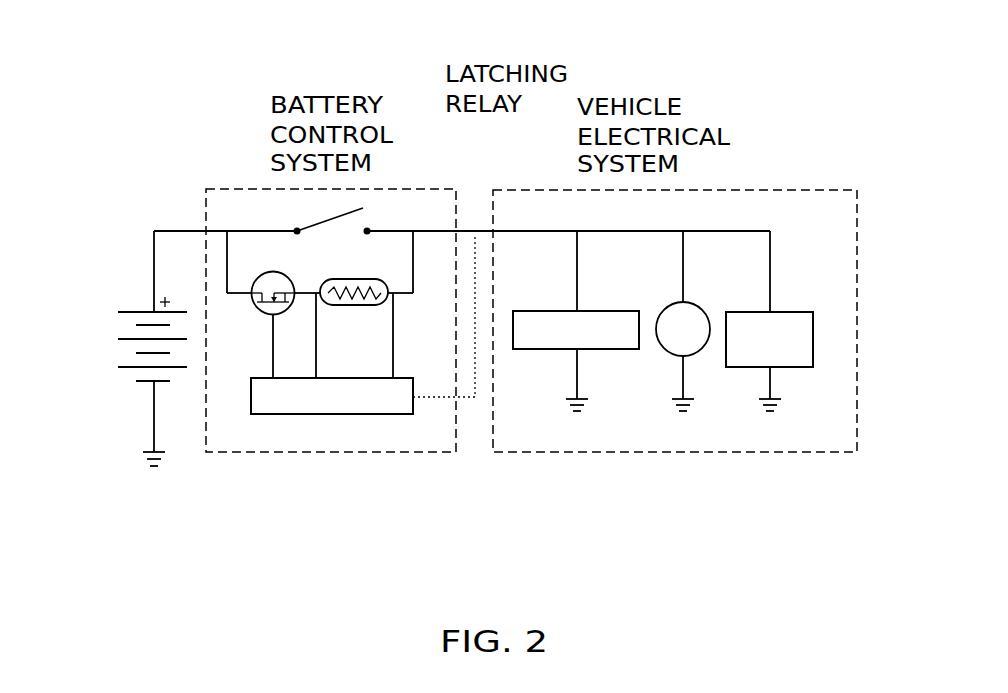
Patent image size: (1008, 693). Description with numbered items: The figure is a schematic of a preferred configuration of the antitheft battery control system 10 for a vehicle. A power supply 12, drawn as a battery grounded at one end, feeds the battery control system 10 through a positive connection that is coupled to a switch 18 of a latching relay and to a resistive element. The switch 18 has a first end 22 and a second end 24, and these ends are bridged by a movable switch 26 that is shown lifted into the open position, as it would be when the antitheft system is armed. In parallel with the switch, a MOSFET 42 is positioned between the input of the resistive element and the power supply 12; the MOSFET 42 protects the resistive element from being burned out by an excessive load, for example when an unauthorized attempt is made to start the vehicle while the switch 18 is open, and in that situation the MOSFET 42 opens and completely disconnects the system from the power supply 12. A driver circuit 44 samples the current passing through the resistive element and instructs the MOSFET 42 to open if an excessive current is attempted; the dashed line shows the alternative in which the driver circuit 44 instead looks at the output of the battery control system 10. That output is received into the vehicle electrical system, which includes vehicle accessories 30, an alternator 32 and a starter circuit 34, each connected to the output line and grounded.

The battery control system 10 is at (372, 70).
The power supply 12 is at (118, 339).
The switch 18 is at (362, 204).
The first end 22 is at (263, 231).
The second end 24 is at (390, 231).
The movable switch 26 is at (320, 223).
The vehicle accessories 30 is at (600, 310).
The alternator 32 is at (700, 306).
The starter circuit 34 is at (813, 311).
The MOSFET 42 is at (283, 276).
The driver circuit 44 is at (333, 415).